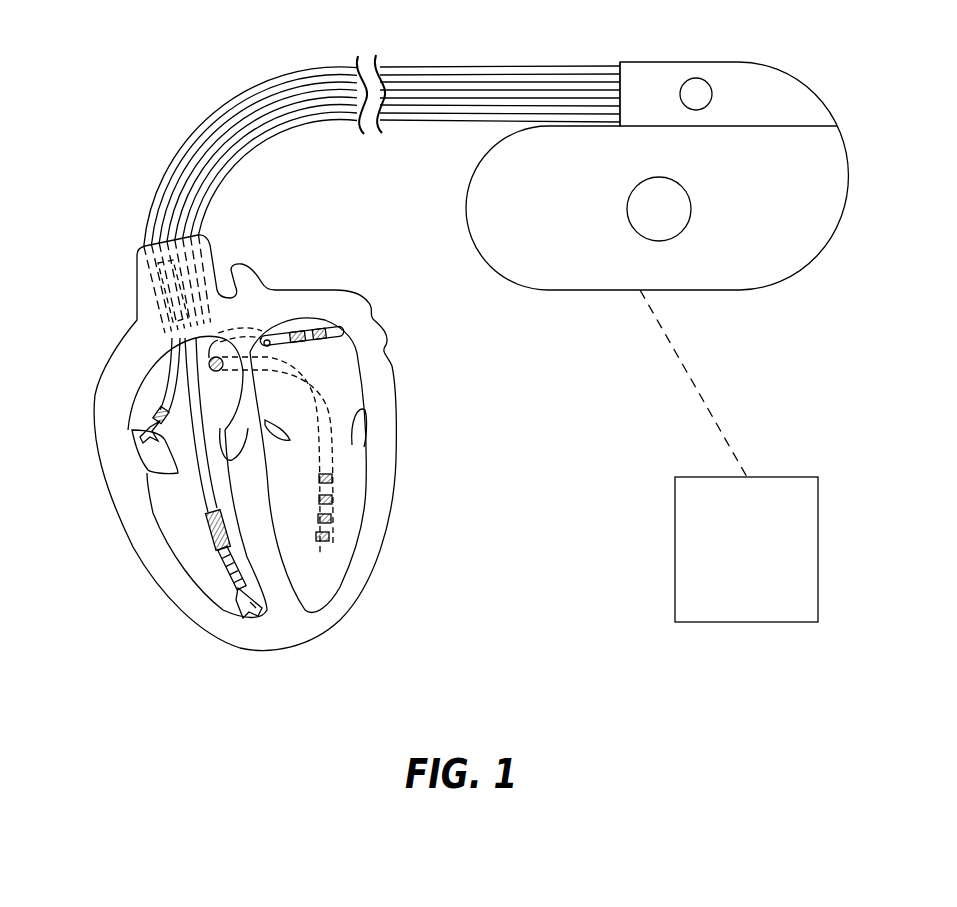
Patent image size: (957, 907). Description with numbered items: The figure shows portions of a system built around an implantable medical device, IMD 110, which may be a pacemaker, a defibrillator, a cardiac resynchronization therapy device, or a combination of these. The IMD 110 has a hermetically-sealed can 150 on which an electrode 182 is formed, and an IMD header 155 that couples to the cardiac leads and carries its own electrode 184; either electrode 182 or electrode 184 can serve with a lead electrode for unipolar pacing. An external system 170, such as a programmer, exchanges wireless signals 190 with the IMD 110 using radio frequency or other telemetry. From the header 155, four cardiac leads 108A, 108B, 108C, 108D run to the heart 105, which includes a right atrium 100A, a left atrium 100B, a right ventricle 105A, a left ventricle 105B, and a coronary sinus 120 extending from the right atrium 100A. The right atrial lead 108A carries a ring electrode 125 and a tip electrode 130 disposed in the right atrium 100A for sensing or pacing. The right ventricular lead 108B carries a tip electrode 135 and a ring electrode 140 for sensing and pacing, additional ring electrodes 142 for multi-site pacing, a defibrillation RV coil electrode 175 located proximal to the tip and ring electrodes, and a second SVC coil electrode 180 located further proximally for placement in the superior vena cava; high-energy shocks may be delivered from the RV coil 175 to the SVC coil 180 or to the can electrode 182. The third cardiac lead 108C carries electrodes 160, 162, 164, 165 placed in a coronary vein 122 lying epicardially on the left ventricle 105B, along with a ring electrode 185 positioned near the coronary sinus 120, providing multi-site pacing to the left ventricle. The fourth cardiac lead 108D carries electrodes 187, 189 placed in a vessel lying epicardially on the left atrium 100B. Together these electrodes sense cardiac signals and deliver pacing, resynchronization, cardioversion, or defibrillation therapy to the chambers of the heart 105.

The IMD 110 is at (678, 153).
The IMD header 155 is at (796, 74).
The electrode 184 is at (712, 94).
The IMD can 150 is at (847, 181).
The electrode 182 is at (691, 209).
The wireless signals 190 is at (695, 385).
The external system 170 is at (747, 622).
The right atrial lead 108A is at (283, 75).
The right ventricular lead 108B is at (225, 112).
The third cardiac lead 108C is at (247, 130).
The fourth cardiac lead 108D is at (222, 167).
The SVC coil electrode 180 is at (162, 285).
The heart 105 is at (387, 438).
The right atrium 100A is at (175, 491).
The left atrium 100B is at (333, 367).
The right ventricle 105A is at (177, 492).
The left ventricle 105B is at (315, 588).
The RV coil electrode 175 is at (210, 530).
The additional ring electrodes 142 is at (230, 565).
The ring electrode 140 is at (240, 576).
The tip electrode 135 is at (245, 600).
The ring electrode 125 is at (143, 415).
The tip electrode 130 is at (172, 445).
The ring electrode 185 is at (212, 340).
The coronary sinus 120 is at (215, 372).
The electrode 187 is at (297, 330).
The electrode 189 is at (317, 328).
The coronary vein 122 is at (303, 370).
The electrode 162 is at (332, 478).
The electrode 164 is at (332, 500).
The electrode 160 is at (327, 520).
The electrode 165 is at (324, 538).